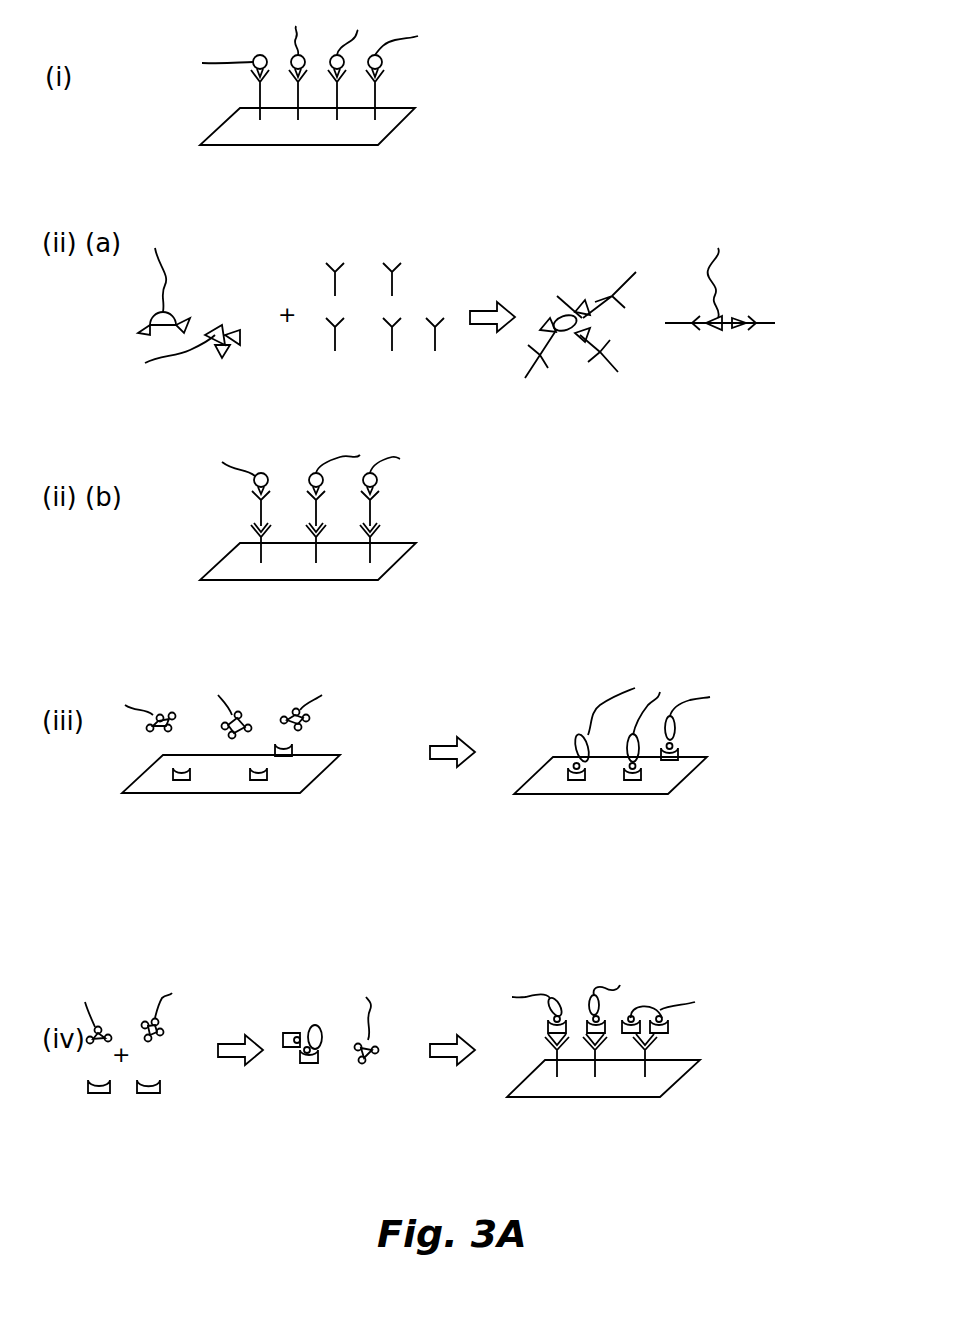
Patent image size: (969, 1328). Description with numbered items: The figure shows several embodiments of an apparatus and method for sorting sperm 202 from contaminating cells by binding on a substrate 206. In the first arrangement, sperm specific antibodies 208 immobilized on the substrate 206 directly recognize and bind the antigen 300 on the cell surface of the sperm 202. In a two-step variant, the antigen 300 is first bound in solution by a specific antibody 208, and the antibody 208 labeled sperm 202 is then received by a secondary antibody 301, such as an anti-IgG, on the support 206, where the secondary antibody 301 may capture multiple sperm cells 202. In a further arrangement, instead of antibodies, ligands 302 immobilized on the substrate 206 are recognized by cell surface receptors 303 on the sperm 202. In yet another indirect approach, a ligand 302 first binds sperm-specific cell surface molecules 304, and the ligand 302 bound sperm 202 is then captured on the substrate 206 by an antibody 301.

The sperm 202 is at (418, 36).
The substrate 206 is at (392, 132).
The sperm specific antibody 208 is at (378, 100).
The antigen 300 is at (253, 72).
The secondary antibody 301 is at (378, 540).
The ligand 302 is at (292, 748).
The cell surface receptor 303 is at (312, 718).
The sperm-specific cell surface molecule 304 is at (165, 1030).